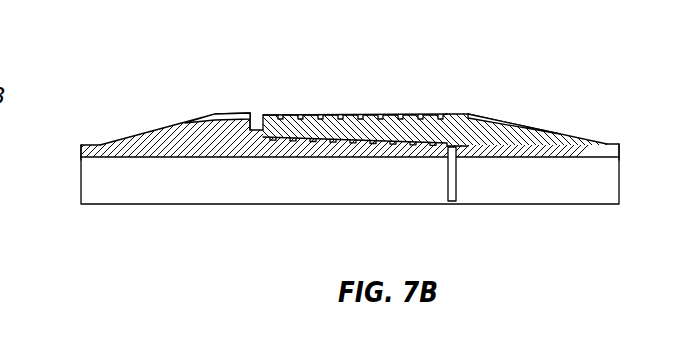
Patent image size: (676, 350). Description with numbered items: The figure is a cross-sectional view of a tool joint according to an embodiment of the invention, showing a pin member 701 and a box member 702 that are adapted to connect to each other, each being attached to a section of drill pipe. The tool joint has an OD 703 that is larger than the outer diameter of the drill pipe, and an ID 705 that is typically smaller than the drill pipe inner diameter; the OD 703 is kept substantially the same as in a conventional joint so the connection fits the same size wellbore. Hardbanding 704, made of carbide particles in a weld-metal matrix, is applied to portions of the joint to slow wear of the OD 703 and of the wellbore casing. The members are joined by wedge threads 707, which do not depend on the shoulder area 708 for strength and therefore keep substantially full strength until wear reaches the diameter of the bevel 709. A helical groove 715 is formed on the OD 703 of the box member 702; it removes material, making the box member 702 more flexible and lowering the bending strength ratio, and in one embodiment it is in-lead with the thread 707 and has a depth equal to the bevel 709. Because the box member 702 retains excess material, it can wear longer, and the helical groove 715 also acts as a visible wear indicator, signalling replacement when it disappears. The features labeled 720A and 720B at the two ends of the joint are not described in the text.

The pin member 701 is at (146, 133).
The box member 702 is at (544, 131).
The OD of the tool joint 703 is at (449, 114).
The hardbanding 704 is at (215, 114).
The ID of the tool joint 705 is at (203, 158).
The wedge threads 707 is at (395, 158).
The shoulder area 708 is at (258, 130).
The bevel 709 is at (266, 118).
The helical groove 715 is at (398, 115).
The left end of assembly 720A is at (98, 145).
The right end of assembly 720B is at (607, 142).